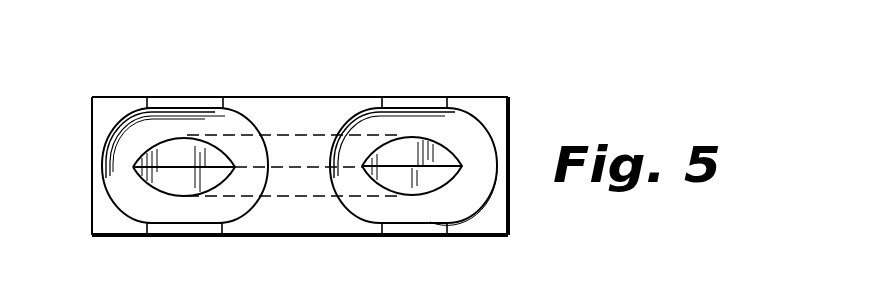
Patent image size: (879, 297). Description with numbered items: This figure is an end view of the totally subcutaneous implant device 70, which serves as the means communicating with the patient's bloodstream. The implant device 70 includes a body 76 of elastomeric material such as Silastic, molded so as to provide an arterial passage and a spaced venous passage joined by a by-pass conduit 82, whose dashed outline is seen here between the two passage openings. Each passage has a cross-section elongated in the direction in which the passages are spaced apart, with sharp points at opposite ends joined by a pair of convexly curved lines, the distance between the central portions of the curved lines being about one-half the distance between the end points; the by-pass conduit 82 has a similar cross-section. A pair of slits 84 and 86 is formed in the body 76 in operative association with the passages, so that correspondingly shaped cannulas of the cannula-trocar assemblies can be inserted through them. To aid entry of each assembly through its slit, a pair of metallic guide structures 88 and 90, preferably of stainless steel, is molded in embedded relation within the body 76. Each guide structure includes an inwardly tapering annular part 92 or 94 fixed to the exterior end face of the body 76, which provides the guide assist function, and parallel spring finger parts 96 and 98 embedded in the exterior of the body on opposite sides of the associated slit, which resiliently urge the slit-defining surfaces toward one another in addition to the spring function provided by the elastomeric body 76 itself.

The implant device 70 is at (157, 82).
The body 76 is at (315, 112).
The by-pass conduit 82 is at (297, 197).
The slit 84 is at (170, 166).
The slit 86 is at (425, 165).
The guide structure 88 is at (124, 108).
The guide structure 90 is at (492, 211).
The inwardly tapering annular part 92 is at (218, 127).
The inwardly tapering annular part 94 is at (447, 127).
The spring finger parts 96 is at (195, 97).
The spring finger parts 98 is at (415, 96).